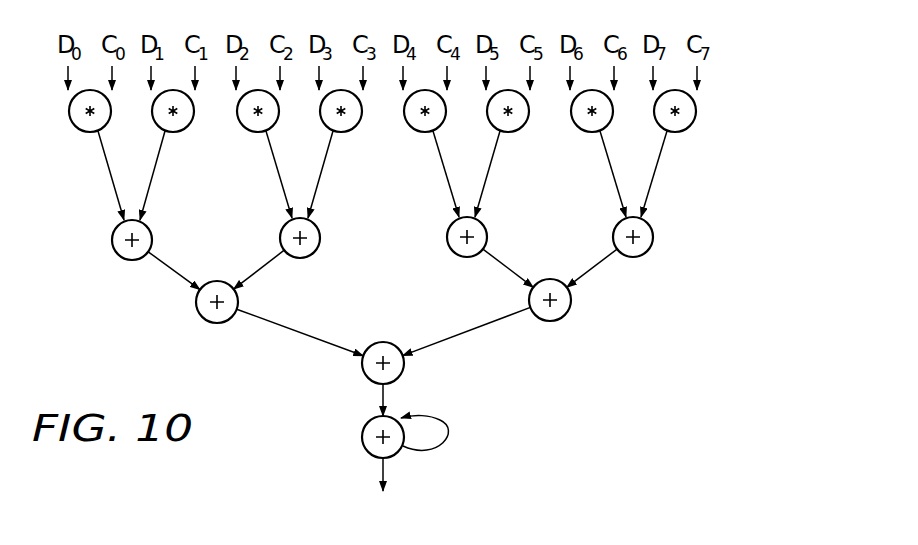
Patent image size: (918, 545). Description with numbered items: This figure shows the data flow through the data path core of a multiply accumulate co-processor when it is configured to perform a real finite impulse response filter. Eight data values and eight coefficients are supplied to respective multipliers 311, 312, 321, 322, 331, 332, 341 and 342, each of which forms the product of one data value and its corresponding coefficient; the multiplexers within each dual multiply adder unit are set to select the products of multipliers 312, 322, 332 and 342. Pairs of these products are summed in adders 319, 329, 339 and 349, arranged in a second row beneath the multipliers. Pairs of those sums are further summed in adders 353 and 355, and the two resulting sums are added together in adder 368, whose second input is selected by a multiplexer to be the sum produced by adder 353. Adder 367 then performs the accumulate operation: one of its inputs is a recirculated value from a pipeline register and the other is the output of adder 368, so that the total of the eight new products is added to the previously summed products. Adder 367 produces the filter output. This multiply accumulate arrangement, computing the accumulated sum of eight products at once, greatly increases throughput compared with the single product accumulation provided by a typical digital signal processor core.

The multiplier 311 is at (72, 132).
The multiplier 312 is at (155, 132).
The multiplier 321 is at (240, 132).
The multiplier 322 is at (323, 132).
The multiplier 331 is at (407, 132).
The multiplier 332 is at (490, 132).
The multiplier 341 is at (574, 132).
The multiplier 342 is at (657, 132).
The adder 319 is at (117, 257).
The adder 329 is at (317, 257).
The adder 339 is at (452, 255).
The adder 349 is at (648, 255).
The adder 353 is at (202, 320).
The adder 355 is at (568, 313).
The adder 368 is at (367, 380).
The adder 367 is at (367, 455).